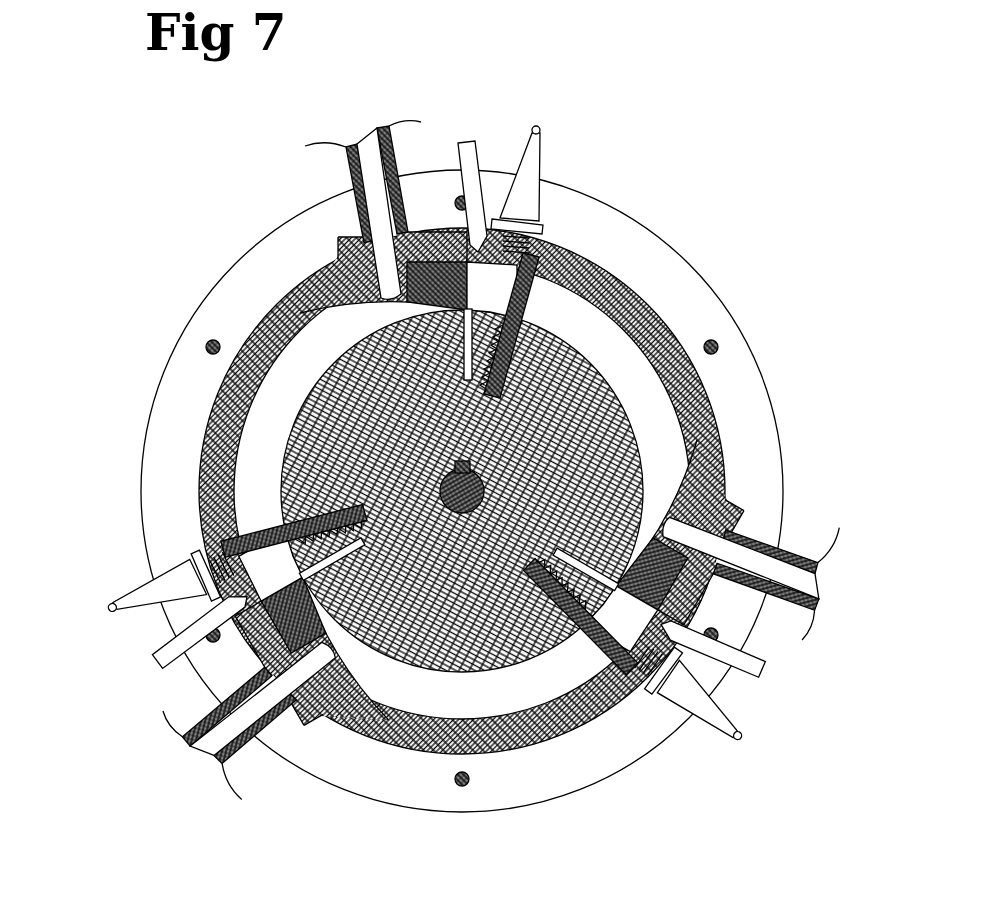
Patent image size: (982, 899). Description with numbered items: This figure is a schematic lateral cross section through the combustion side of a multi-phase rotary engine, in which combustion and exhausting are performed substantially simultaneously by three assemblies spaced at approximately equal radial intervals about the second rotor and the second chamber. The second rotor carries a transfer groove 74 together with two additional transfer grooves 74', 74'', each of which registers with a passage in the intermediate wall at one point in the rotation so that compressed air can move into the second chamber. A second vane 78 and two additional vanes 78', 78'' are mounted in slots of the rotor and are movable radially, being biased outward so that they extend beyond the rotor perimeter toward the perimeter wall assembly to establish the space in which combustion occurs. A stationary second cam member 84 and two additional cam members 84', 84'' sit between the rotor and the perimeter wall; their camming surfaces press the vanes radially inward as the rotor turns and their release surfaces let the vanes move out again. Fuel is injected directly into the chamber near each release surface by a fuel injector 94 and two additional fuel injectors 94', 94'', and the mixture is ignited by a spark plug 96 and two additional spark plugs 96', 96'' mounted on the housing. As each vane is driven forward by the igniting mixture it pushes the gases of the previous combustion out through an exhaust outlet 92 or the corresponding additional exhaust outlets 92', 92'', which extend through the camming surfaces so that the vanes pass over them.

The transfer groove 74 is at (353, 282).
The second vane 78 is at (587, 277).
The second cam member 84 is at (422, 184).
The exhaust outlet 92 is at (322, 182).
The fuel injector 94 is at (513, 217).
The spark plug 96 is at (569, 161).
The transfer groove 74' is at (716, 511).
The additional vane 78' is at (597, 700).
The additional cam member 84' is at (750, 605).
The exhaust outlet 92' is at (789, 548).
The additional fuel injector 94' is at (681, 663).
The additional spark plug 96' is at (708, 741).
The transfer groove 74'' is at (335, 693).
The additional vane 78'' is at (206, 529).
The additional cam member 84'' is at (211, 692).
The exhaust outlet 92'' is at (244, 756).
The additional fuel injector 94'' is at (197, 607).
The additional spark plug 96'' is at (119, 584).